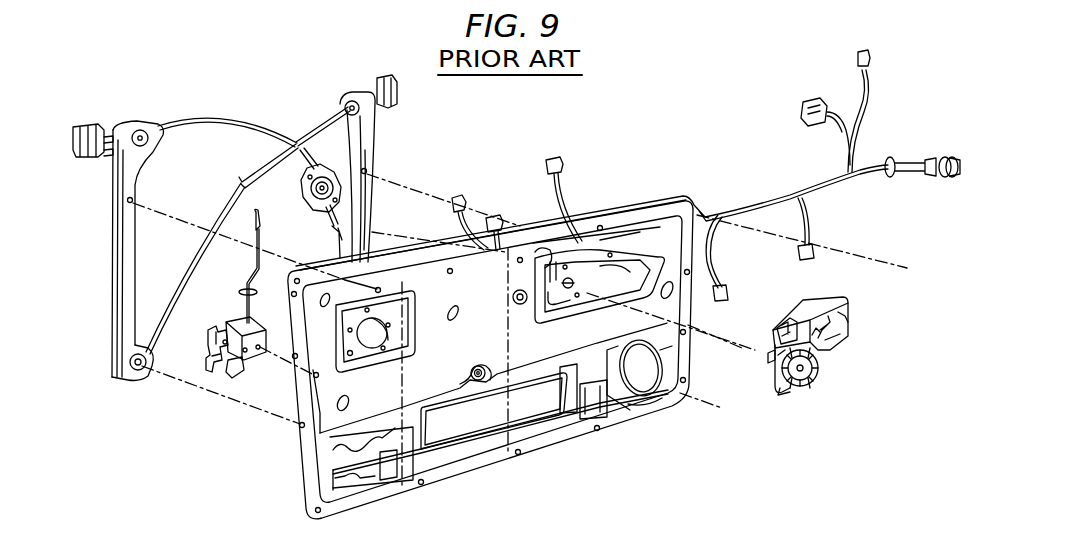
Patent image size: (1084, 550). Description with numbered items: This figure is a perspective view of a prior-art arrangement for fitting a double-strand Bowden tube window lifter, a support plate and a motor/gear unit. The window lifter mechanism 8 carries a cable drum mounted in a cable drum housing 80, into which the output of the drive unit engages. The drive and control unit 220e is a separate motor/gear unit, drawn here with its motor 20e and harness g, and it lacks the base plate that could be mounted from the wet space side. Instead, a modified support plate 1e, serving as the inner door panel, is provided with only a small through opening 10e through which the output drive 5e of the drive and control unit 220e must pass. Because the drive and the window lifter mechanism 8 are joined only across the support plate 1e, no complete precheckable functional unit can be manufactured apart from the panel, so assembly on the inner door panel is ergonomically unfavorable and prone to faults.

The window lifter mechanism 8 is at (157, 116).
The cable drum housing 80 is at (318, 160).
The support plate 1e is at (322, 410).
The through opening 10e is at (570, 282).
The wire harness g is at (734, 214).
The power window motor 20e is at (803, 383).
The drive and control unit 220e is at (820, 338).
The output drive 5e is at (765, 362).